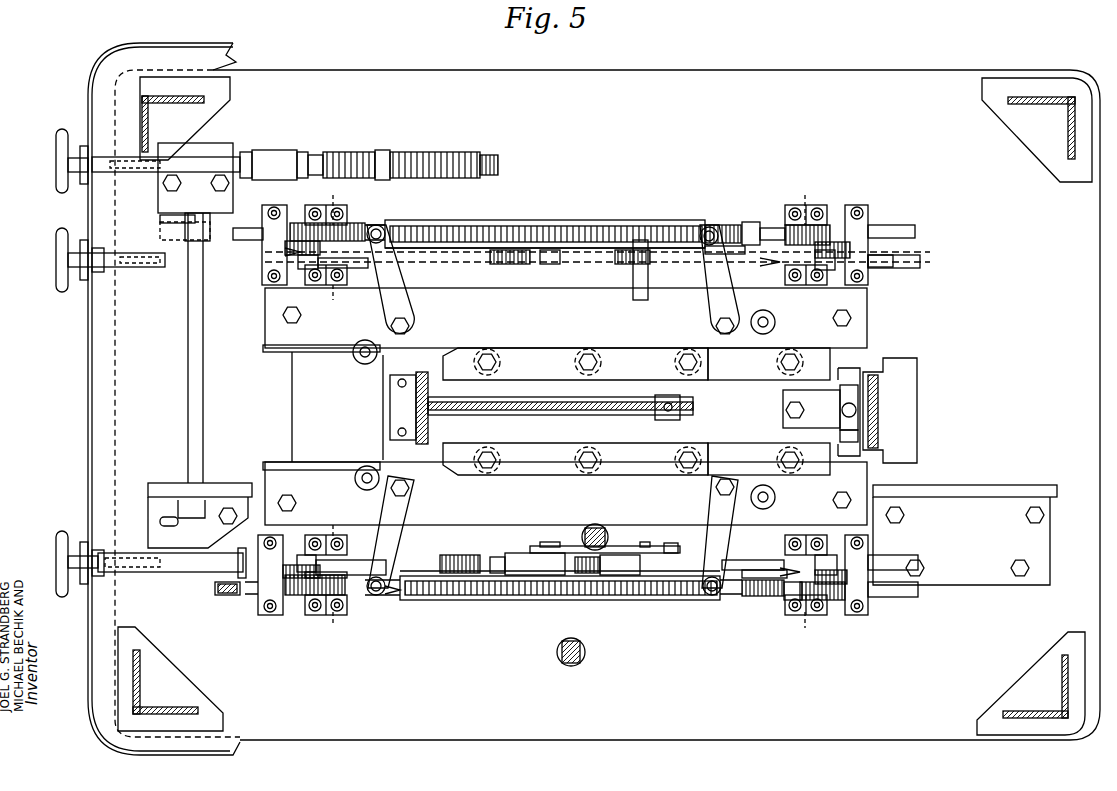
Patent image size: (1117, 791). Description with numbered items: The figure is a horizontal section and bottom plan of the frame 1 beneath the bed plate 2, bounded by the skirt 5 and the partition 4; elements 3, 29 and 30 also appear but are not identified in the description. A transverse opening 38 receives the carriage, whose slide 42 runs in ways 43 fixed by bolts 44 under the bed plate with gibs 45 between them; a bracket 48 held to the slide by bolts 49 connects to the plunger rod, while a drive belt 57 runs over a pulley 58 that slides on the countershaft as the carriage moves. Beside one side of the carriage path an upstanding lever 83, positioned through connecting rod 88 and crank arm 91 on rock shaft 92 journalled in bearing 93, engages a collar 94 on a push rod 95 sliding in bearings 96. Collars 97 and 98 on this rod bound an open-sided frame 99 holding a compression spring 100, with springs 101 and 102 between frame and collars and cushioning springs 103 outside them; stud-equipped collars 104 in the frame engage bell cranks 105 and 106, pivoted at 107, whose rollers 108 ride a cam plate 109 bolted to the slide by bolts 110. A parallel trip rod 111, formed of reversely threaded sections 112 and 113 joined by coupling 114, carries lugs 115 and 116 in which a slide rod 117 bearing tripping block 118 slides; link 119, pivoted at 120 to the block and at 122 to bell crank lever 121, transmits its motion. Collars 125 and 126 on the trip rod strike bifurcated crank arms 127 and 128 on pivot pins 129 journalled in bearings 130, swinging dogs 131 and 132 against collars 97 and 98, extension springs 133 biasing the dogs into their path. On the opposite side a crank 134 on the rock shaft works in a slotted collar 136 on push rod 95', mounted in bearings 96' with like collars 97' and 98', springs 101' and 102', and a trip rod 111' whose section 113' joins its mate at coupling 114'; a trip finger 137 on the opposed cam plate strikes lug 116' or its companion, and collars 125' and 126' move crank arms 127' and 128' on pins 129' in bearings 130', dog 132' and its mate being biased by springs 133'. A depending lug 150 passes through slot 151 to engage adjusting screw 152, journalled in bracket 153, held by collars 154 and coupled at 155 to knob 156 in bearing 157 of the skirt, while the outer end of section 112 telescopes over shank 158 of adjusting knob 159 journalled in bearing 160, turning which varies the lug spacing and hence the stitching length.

The frame 1 is at (699, 68).
The bed plate 2 is at (780, 88).
The corner bracket 3 is at (200, 96).
The partition 4 is at (216, 490).
The skirt 5 is at (133, 45).
The shaft 29 is at (572, 666).
The shaft 30 is at (590, 524).
The transverse elongated opening 38 is at (294, 408).
The slide 42 is at (852, 368).
The ways 43 is at (566, 406).
The bolts 44 is at (282, 315).
The gibs 45 is at (283, 350).
The bracket 48 is at (498, 416).
The bolts 49 is at (402, 412).
The drive belt 57 is at (880, 376).
The pulley 58 is at (880, 410).
The upstanding lever 83 is at (216, 592).
The connecting rod 88 is at (166, 526).
The crank arm 91 is at (192, 520).
The rock shaft 92 is at (190, 358).
The bearing 93 is at (195, 178).
The collar 94 is at (240, 592).
The push rod 95 is at (907, 600).
The push rod 95' is at (594, 213).
The bearings 96 is at (568, 592).
The bearings 96' is at (591, 224).
The collar 97 is at (391, 618).
The abutment-forming collar 97' is at (258, 265).
The collar 98 is at (775, 615).
The abutment-forming collar 98' is at (758, 215).
The rectangular open-sided frame 99 is at (460, 598).
The coil compression spring 100 is at (640, 600).
The coil compression spring 101 is at (399, 616).
The compression spring 101' is at (390, 211).
The coil compression spring 102 is at (745, 611).
The compression spring 102' is at (722, 209).
The cushioning springs 103 is at (312, 218).
The stud-equipped collar 104 is at (384, 594).
The bell crank 105 is at (414, 514).
The bell crank 106 is at (712, 510).
The pivot 107 is at (410, 486).
The rollers 108 is at (364, 466).
The cam plate 109 is at (726, 446).
The bolts 110 is at (600, 460).
The trip rod 111 is at (895, 553).
The trip rod 111' is at (923, 259).
The trip rod section 112 is at (215, 570).
The trip rod section 113 is at (753, 553).
The trip rod section 113' is at (895, 271).
The coupling 114 is at (578, 592).
The coupling 114' is at (539, 270).
The lug 115 is at (470, 556).
The lug 116 is at (615, 591).
The lug 116' is at (653, 268).
The slide rod 117 is at (496, 556).
The block 118 is at (532, 576).
The link 119 is at (628, 544).
The pivot 120 is at (546, 542).
The bell crank lever 121 is at (666, 546).
The pivot 122 is at (646, 542).
The collar 125 is at (313, 537).
The collar 125' is at (268, 288).
The collar 126 is at (835, 546).
The collar 126' is at (869, 281).
The bifurcated crank arm 127 is at (351, 599).
The crank arm 127' is at (337, 296).
The bifurcated crank arm 128 is at (777, 558).
The crank arm 128' is at (759, 272).
The pivot pins 129 is at (578, 569).
The pivot pins 129' is at (568, 241).
The bearings 130 is at (565, 579).
The bearings 130' is at (575, 206).
The dog 131 is at (326, 616).
The dog 132 is at (760, 599).
The dog 132' is at (749, 217).
The coil extension springs 133 is at (533, 604).
The coil extension springs 133' is at (573, 246).
The crank 134 is at (168, 218).
The slotted collar 136 is at (165, 232).
The trip finger 137 is at (632, 300).
The depending lug 150 is at (383, 150).
The slot 151 is at (432, 150).
The adjusting screw 152 is at (492, 153).
The bracket 153 is at (272, 150).
The collars 154 is at (246, 150).
The coupling 155 is at (110, 182).
The adjusting knob 156 is at (58, 164).
The bearing 157 is at (84, 158).
The extended shank 158 is at (137, 574).
The adjusting knob 159 is at (62, 552).
The bearing 160 is at (86, 540).